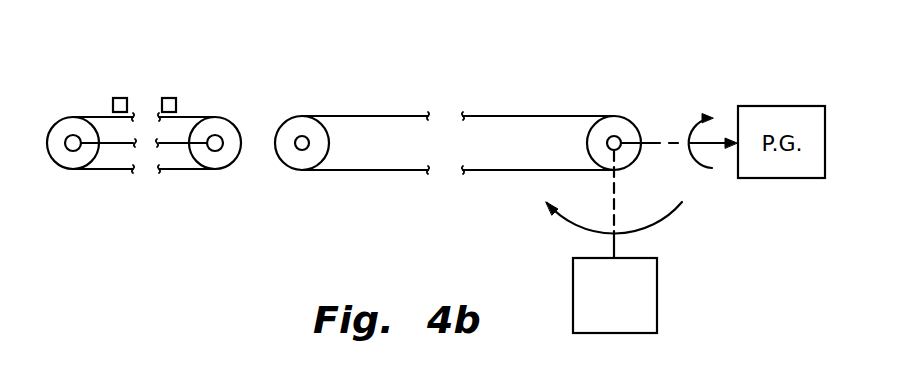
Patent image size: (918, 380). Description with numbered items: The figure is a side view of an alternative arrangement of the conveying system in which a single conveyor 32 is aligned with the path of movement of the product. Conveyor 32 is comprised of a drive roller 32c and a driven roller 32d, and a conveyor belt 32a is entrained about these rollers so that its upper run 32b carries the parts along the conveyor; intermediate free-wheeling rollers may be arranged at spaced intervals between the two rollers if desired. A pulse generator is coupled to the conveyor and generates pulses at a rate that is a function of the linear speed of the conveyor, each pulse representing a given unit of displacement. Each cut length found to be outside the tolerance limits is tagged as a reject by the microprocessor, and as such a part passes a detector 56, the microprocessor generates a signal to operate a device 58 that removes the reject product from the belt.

The first conveyor 32 is at (487, 145).
The conveyor belt 32a is at (578, 100).
The upper run 32b is at (357, 113).
The drive roller 32c is at (633, 152).
The driven roller 32d is at (297, 167).
The detector 56 is at (168, 97).
The device 58 is at (119, 97).